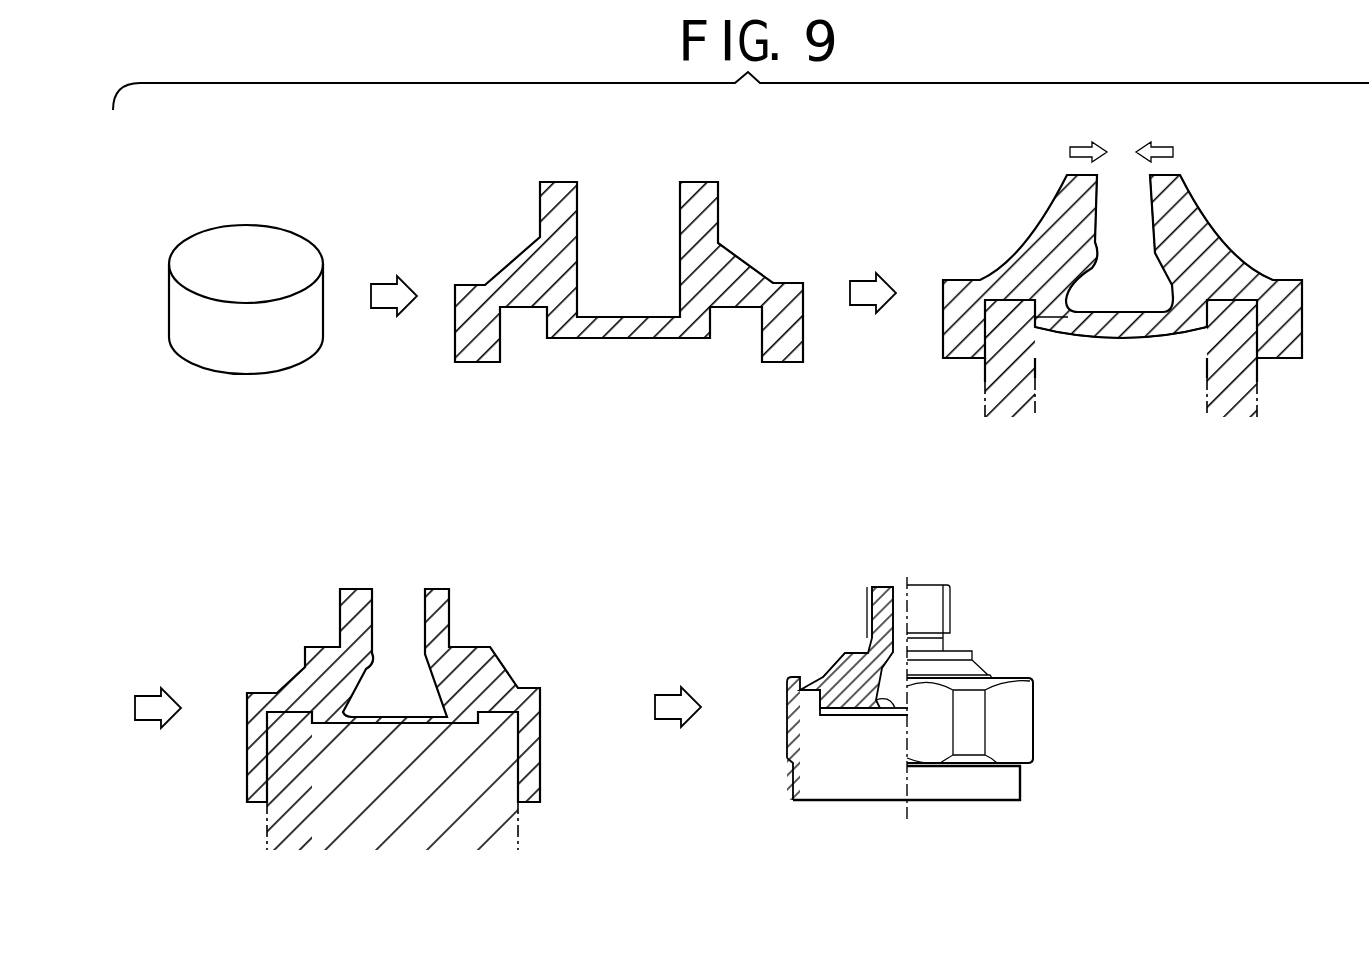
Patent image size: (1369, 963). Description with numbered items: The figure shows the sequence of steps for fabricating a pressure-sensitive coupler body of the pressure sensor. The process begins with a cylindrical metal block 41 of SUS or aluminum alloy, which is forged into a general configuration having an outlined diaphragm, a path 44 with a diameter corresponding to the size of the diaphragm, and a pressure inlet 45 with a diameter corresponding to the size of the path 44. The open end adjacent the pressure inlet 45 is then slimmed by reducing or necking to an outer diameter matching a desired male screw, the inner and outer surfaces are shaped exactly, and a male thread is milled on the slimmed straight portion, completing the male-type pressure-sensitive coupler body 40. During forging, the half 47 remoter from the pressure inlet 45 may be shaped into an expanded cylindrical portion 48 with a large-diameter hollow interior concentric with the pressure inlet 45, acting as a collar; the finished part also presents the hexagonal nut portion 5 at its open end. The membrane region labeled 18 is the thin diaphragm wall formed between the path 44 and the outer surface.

The cylindrical metal block 41 is at (262, 245).
The male-type pressure-sensitive coupler body 40 is at (735, 188).
The pressure inlet 45 is at (583, 190).
The path 44 is at (580, 258).
The half remoter from the pressure inlet 47 is at (747, 260).
The thin diaphragm 18 is at (603, 337).
The expanded cylindrical portion 48 is at (793, 773).
The hexagonal nut portion 5 is at (1015, 711).